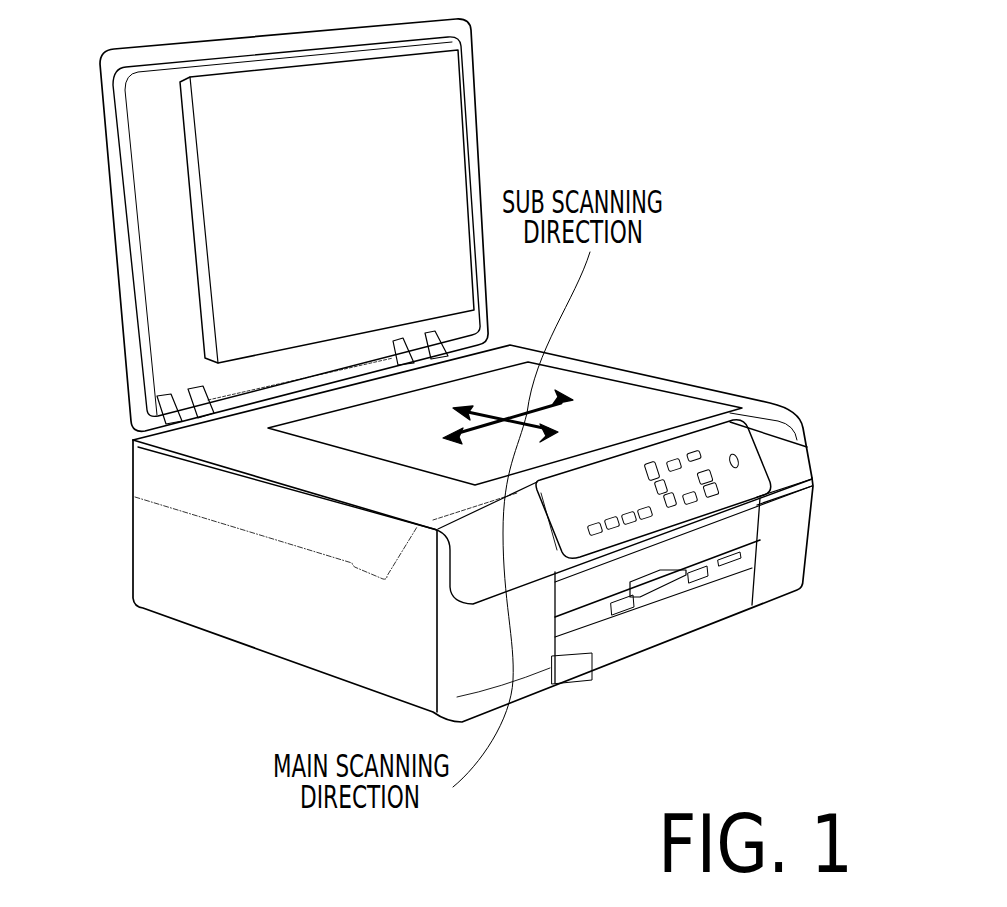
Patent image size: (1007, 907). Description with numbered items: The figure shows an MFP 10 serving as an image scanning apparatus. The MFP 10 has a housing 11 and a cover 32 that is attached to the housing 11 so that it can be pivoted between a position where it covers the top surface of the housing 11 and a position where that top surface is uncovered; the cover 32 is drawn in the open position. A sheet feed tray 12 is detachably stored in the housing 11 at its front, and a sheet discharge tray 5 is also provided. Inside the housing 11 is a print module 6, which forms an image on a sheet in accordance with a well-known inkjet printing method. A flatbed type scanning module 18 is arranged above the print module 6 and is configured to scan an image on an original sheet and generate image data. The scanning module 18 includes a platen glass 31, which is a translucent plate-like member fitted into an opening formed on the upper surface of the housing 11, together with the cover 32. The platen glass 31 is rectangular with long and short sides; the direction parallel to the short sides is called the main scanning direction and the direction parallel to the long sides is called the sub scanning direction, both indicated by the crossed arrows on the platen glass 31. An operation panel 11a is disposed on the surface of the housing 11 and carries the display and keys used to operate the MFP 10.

The MFP 10 is at (633, 80).
The housing 11 is at (800, 520).
The operation panel 11a is at (750, 440).
The sheet feed tray 12 is at (663, 610).
The sheet discharge tray 5 is at (703, 579).
The print module 6 is at (750, 537).
The scanning module 18 is at (598, 357).
The platen glass 31 is at (648, 393).
The cover 32 is at (120, 202).